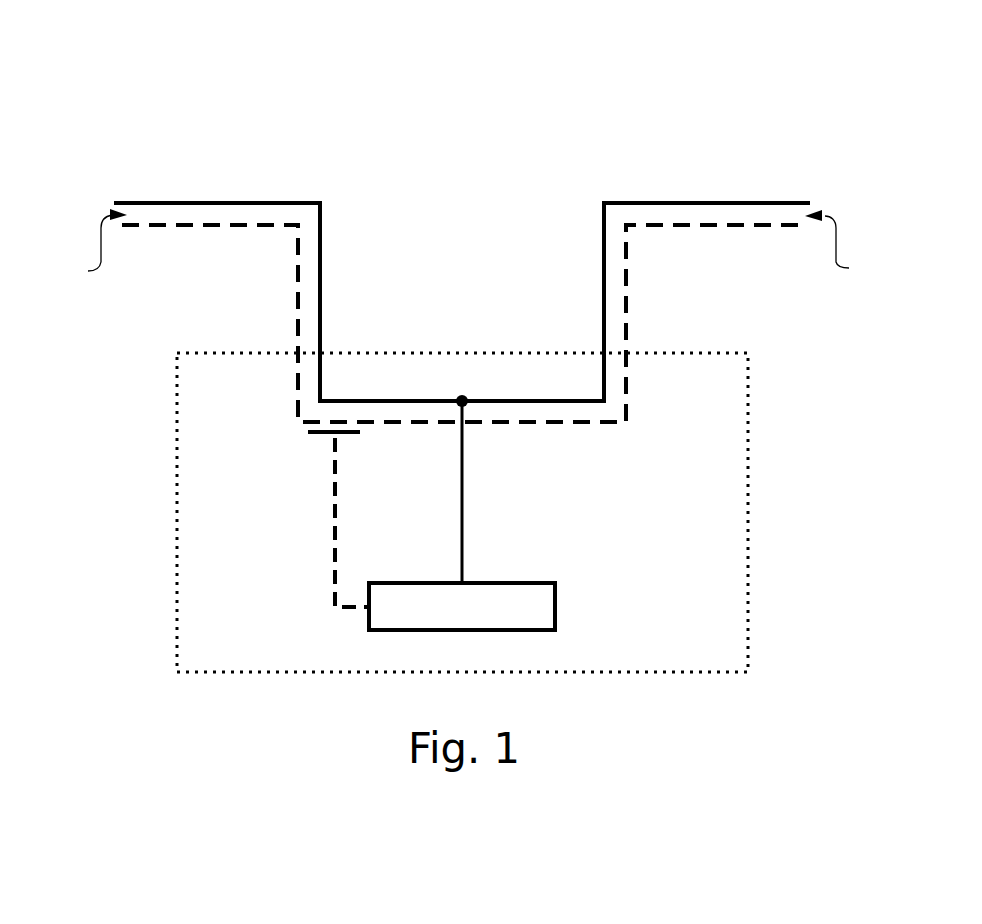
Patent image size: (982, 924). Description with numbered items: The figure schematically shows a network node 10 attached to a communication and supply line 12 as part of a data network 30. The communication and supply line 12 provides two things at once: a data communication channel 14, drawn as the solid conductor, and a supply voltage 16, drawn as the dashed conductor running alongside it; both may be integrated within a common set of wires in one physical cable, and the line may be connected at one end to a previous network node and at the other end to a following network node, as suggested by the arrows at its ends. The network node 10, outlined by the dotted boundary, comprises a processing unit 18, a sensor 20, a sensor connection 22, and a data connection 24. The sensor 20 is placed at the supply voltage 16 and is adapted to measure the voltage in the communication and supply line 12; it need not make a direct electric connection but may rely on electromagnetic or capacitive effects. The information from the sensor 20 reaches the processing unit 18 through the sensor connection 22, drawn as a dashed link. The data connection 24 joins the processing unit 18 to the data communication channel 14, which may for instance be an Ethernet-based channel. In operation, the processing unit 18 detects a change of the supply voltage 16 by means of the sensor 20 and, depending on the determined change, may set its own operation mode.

The network node 10 is at (749, 455).
The communication and supply line 12 is at (467, 248).
The data communication channel 14 is at (260, 202).
The supply voltage 16 is at (297, 262).
The processing unit 18 is at (557, 600).
The sensor 20 is at (323, 437).
The sensor connection 22 is at (335, 540).
The data connection 24 is at (463, 490).
The data network 30 is at (574, 114).